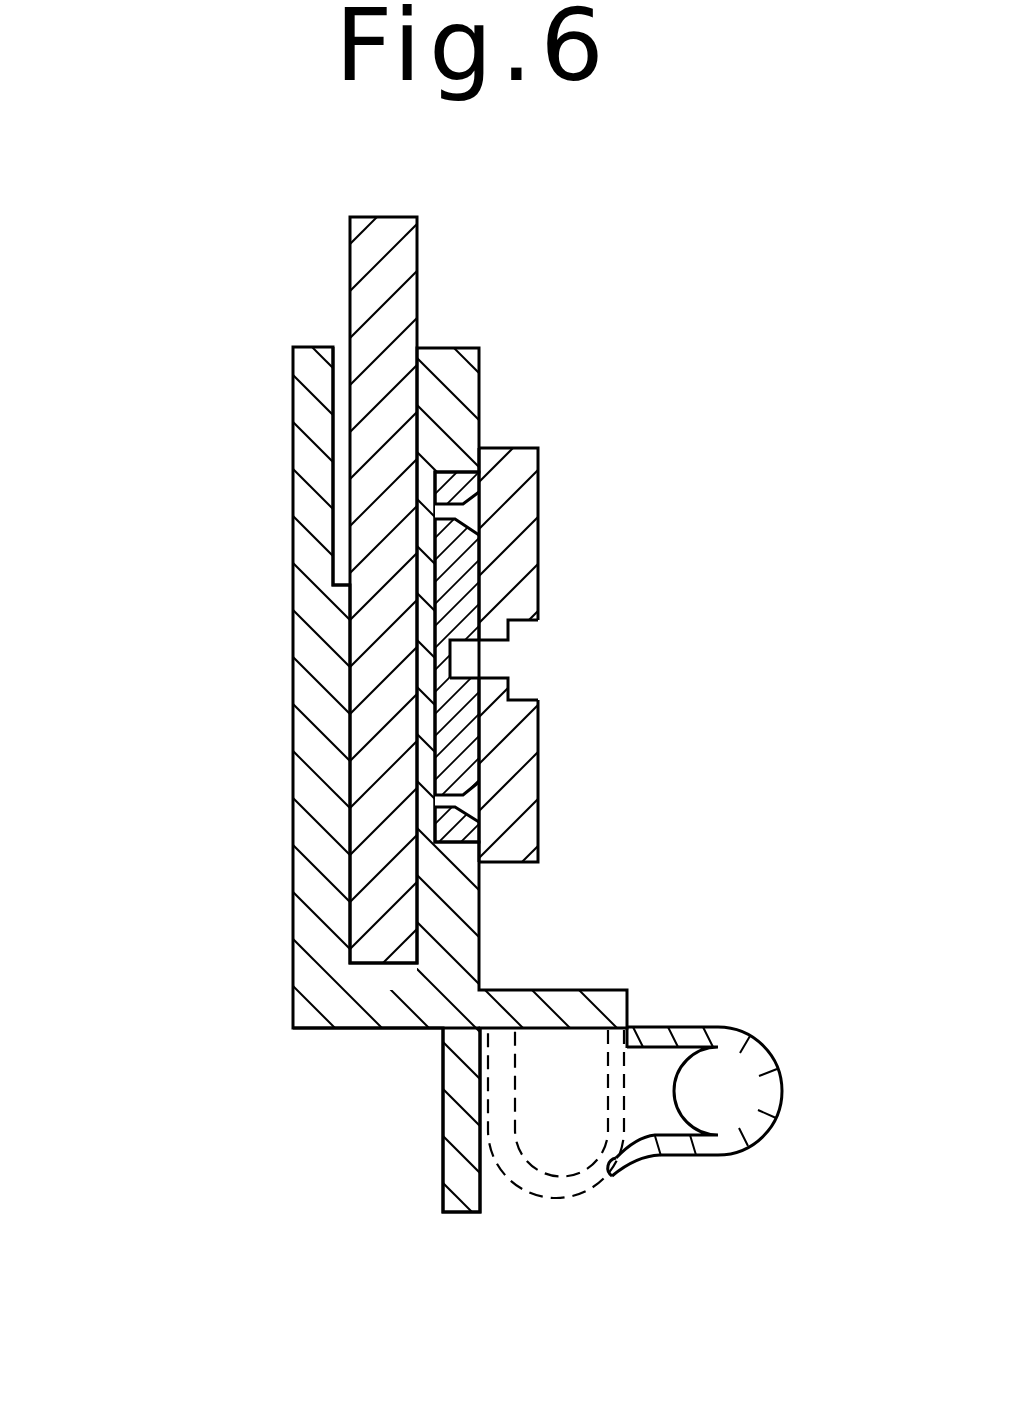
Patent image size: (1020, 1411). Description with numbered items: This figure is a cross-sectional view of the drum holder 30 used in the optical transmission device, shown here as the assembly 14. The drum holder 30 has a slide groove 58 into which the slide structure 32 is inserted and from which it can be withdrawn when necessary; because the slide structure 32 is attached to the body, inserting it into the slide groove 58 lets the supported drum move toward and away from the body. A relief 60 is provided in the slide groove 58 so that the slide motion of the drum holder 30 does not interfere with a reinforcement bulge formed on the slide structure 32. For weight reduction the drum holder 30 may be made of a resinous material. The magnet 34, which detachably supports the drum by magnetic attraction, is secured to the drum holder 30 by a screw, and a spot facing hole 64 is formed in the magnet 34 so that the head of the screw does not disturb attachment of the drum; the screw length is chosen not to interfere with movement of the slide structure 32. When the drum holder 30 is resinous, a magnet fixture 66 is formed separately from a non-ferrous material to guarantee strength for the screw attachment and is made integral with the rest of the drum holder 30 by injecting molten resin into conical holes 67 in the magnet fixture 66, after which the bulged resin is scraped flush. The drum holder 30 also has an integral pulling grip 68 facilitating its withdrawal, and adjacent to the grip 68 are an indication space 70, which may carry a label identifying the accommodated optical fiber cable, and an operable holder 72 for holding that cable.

The electrical connector assembly 14 is at (510, 760).
The drum holder 30 is at (293, 630).
The slide structure 32 is at (418, 243).
The magnet 34 is at (510, 448).
The slide groove 58 is at (417, 393).
The relief 60 is at (345, 475).
The spot facing hole 64 is at (538, 641).
The magnet fixture 66 is at (460, 848).
The conical holes 67 is at (472, 790).
The pulling grip 68 is at (462, 1213).
The indication space 70 is at (362, 1030).
The operable holder 72 is at (746, 1030).